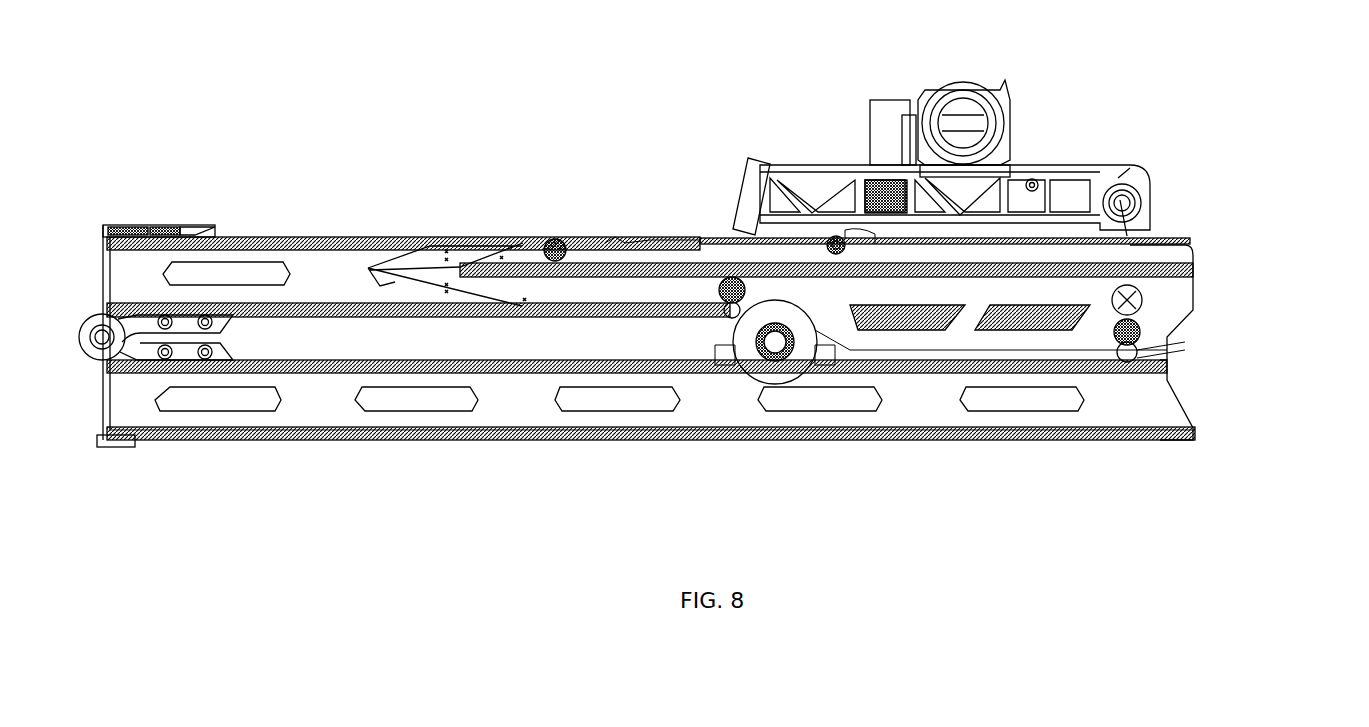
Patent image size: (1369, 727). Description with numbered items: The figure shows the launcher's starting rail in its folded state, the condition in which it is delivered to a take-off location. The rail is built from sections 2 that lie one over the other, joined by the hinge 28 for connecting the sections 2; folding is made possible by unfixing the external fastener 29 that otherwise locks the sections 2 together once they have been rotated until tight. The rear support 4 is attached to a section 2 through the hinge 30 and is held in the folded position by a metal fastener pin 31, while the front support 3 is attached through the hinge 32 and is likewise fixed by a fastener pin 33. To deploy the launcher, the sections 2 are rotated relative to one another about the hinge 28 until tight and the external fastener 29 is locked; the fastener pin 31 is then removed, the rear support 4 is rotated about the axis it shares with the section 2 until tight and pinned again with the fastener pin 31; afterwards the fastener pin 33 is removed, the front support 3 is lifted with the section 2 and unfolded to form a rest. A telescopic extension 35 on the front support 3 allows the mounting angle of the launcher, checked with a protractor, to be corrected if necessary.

The sections of the starting rail 2 is at (513, 407).
The front support 3 is at (632, 253).
The rear support 4 is at (793, 157).
The hinge for connecting the sections 28 is at (88, 308).
The external fastener 29 is at (187, 237).
The hinge for connecting the section to the rear support 30 is at (1135, 197).
The fastener pin of the rear support 31 is at (1032, 185).
The hinge of the front support 32 is at (1143, 297).
The fastener pin of the front support 33 is at (729, 318).
The telescopic extension of the front support 35 is at (433, 253).